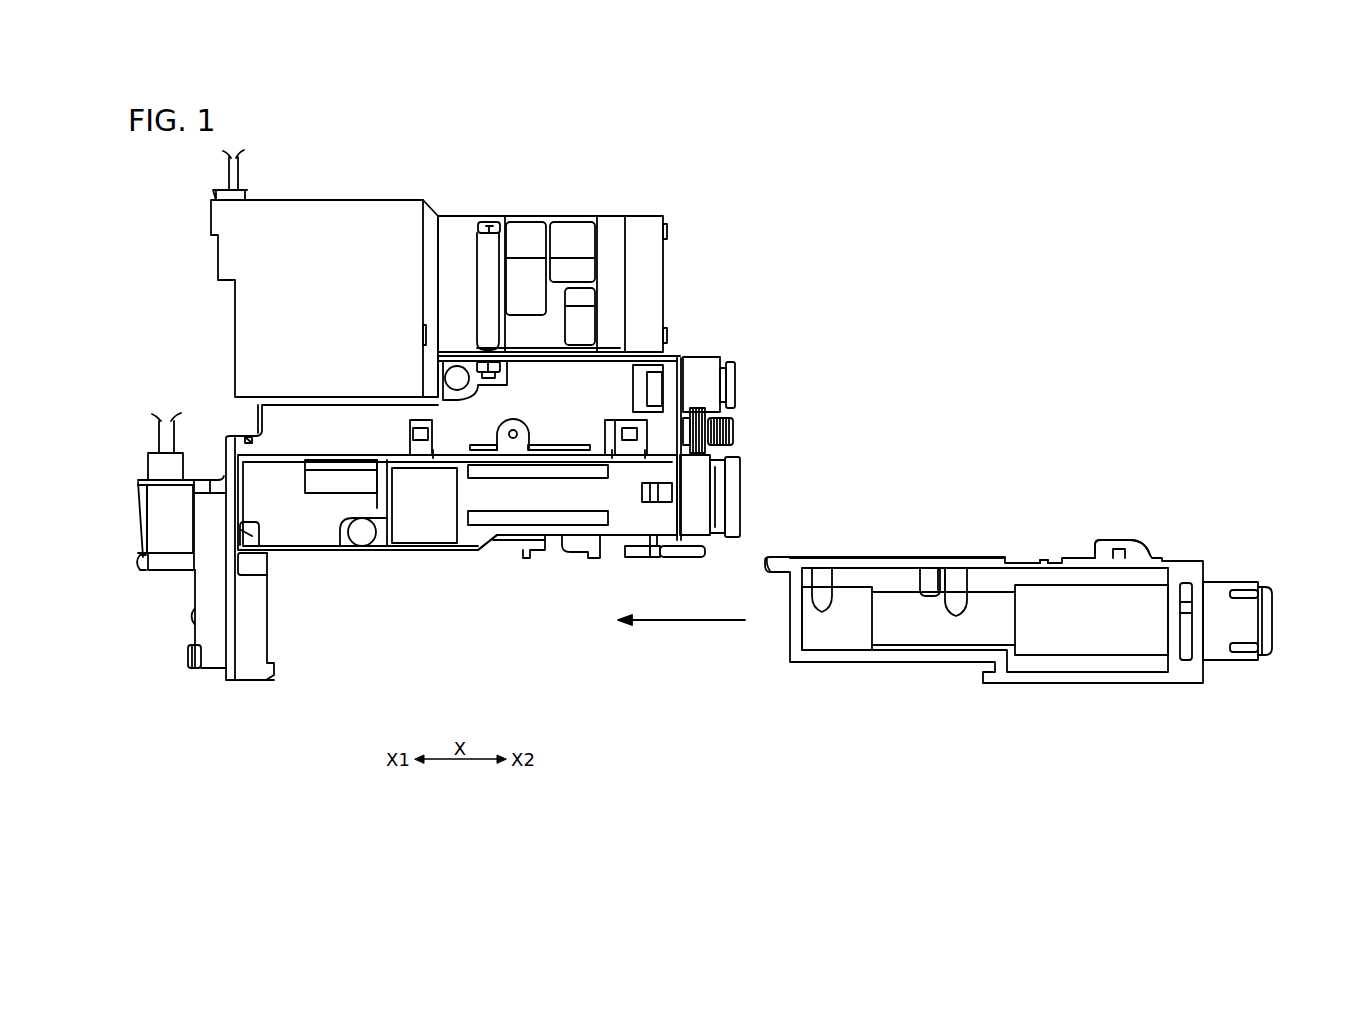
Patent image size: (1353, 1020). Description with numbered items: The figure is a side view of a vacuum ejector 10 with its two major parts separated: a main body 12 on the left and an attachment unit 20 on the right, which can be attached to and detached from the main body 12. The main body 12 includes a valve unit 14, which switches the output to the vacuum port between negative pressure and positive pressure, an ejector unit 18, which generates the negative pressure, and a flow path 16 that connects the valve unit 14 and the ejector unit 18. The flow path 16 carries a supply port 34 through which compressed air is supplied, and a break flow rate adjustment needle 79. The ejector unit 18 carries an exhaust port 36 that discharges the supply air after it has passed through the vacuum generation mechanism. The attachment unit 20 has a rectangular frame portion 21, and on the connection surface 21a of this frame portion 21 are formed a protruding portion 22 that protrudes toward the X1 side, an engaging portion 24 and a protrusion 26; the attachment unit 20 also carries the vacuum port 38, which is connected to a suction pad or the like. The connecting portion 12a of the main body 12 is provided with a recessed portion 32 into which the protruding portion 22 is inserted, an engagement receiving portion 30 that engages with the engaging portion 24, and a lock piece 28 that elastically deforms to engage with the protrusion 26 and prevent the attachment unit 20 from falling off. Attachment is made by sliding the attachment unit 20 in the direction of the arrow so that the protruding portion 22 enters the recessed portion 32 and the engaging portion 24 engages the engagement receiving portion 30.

The vacuum ejector 10 is at (854, 152).
The main body 12 is at (674, 210).
The connecting portion 12a is at (398, 557).
The valve unit 14 is at (665, 270).
The flow path 16 is at (672, 352).
The ejector unit 18 is at (468, 538).
The attachment unit 20 is at (965, 603).
The frame portion 21 is at (1073, 683).
The connection surface 21a is at (840, 555).
The protruding portion 22 is at (777, 568).
The engaging portion 24 is at (1102, 537).
The protrusion 26 is at (1045, 558).
The lock piece 28 is at (517, 557).
The engagement receiving portion 30 is at (590, 553).
The recessed portion 32 is at (267, 560).
The supply port 34 is at (738, 378).
The exhaust port 36 is at (740, 490).
The vacuum port 38 is at (1233, 583).
The break flow rate adjustment needle 79 is at (735, 430).